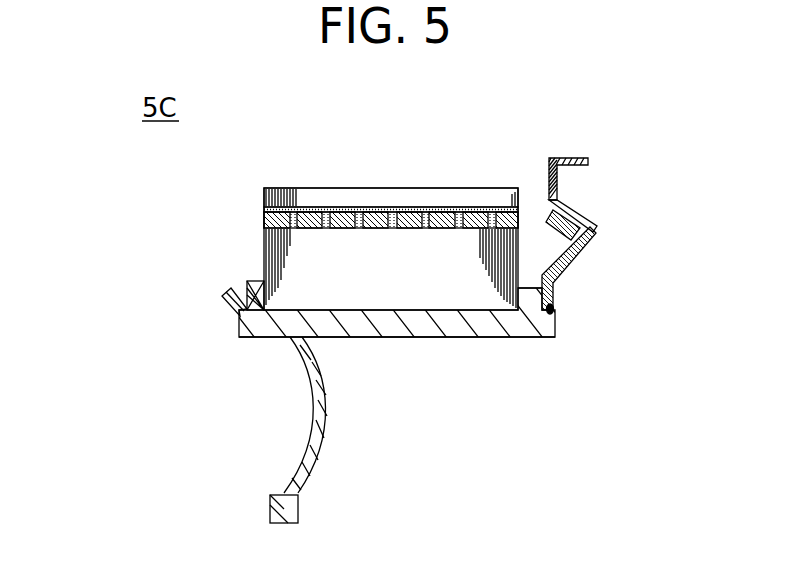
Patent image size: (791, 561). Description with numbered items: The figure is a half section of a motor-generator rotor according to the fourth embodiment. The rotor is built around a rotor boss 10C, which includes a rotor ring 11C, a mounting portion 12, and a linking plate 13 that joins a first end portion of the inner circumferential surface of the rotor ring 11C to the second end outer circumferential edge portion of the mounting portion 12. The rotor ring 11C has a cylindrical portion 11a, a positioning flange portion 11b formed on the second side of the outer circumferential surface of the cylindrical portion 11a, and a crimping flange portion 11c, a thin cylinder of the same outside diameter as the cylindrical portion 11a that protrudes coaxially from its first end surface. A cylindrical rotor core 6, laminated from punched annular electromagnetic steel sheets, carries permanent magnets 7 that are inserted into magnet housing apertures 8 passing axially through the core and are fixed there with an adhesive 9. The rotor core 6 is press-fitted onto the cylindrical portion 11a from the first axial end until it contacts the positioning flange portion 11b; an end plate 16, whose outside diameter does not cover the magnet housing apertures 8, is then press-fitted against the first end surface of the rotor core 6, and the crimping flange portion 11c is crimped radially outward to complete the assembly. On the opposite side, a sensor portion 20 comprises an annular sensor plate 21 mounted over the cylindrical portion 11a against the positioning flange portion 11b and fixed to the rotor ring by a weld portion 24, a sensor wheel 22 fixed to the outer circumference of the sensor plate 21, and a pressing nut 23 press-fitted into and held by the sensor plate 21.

The rotor core 6 is at (300, 200).
The permanent magnets 7 is at (338, 227).
The magnet housing apertures 8 is at (390, 206).
The adhesive 9 is at (430, 206).
The rotor boss 10C is at (124, 327).
The rotor ring 11C is at (393, 337).
The cylindrical portion 11a is at (427, 318).
The positioning flange portion 11b is at (530, 295).
The crimping flange portion 11c is at (221, 298).
The mounting portion 12 is at (273, 512).
The linking plate 13 is at (313, 408).
The end plate 16 is at (247, 283).
The sensor portion 20 is at (624, 235).
The sensor plate 21 is at (571, 256).
The sensor wheel 22 is at (586, 160).
The pressing nut 23 is at (576, 210).
The weld portion 24 is at (558, 311).